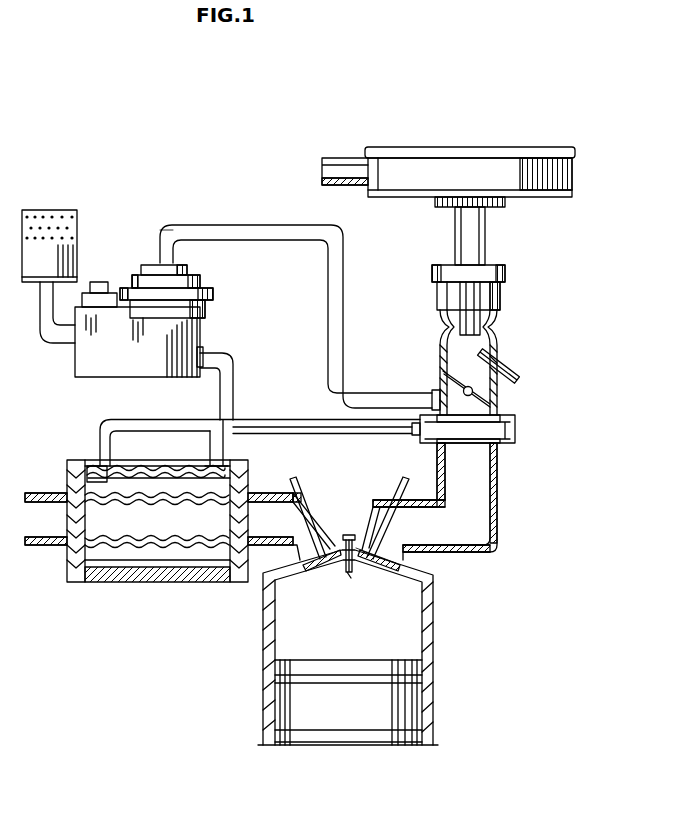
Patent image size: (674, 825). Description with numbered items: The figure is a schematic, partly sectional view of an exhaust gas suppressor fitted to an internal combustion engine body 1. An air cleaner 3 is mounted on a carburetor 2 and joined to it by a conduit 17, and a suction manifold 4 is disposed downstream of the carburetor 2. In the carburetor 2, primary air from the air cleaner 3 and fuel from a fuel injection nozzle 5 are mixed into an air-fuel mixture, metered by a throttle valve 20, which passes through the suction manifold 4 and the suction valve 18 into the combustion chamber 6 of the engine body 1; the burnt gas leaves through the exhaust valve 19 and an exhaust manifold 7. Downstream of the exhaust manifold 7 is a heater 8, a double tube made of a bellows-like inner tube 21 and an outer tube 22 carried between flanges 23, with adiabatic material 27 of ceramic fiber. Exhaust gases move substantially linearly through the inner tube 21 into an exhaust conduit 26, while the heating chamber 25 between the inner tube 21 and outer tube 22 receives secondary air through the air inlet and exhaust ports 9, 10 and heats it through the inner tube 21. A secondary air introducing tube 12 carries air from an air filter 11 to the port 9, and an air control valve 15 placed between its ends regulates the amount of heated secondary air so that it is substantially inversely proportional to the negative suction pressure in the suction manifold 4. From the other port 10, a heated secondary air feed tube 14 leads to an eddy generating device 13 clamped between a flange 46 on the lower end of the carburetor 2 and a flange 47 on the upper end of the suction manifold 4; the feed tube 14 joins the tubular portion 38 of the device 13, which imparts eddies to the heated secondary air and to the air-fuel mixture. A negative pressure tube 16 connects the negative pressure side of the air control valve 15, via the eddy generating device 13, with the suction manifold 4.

The internal combustion engine body 1 is at (437, 714).
The carburetor 2 is at (500, 341).
The air cleaner 3 is at (437, 148).
The suction manifold 4 is at (501, 526).
The fuel injection nozzle 5 is at (516, 367).
The combustion chamber 6 is at (282, 636).
The exhaust manifold 7 is at (307, 500).
The heater 8 is at (155, 536).
The air inlet and exhaust port for secondary air 9 is at (88, 462).
The air inlet and exhaust port for secondary air 10 is at (232, 456).
The air filter 11 is at (49, 210).
The secondary air introducing tube 12 is at (36, 322).
The eddy generating device 13 is at (514, 431).
The heated secondary air feed tube 14 is at (282, 417).
The air control valve 15 is at (107, 380).
The negative pressure tube 16 is at (268, 221).
The conduit 17 is at (470, 250).
The suction valve 18 is at (372, 571).
The exhaust valve 19 is at (338, 571).
The throttle valve 20 is at (456, 374).
The inner tube 21 is at (169, 499).
The outer tube 22 is at (172, 487).
The flange 23 is at (80, 583).
The heating chamber 25 is at (139, 477).
The exhaust conduit 26 is at (50, 546).
The adiabatic material 27 is at (104, 583).
The tubular portion 38 is at (417, 434).
The flange 46 is at (502, 416).
The flange 47 is at (503, 444).